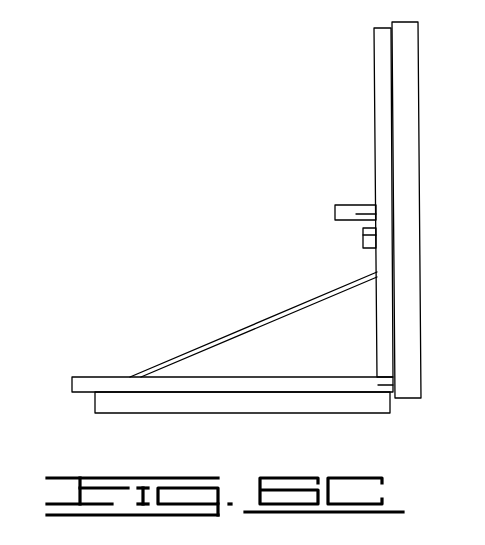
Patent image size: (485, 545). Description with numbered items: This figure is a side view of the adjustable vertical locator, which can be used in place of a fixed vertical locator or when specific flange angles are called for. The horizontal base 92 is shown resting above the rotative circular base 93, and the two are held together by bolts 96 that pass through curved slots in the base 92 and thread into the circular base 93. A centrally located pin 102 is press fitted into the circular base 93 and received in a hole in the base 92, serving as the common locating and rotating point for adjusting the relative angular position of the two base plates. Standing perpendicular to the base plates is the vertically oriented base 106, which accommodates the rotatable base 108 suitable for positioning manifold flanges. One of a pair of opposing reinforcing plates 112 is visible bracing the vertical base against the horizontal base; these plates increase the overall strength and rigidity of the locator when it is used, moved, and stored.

The base 92 is at (383, 117).
The rotative circular base 93 is at (407, 148).
The bolts 96 is at (363, 242).
The pin 102 is at (352, 209).
The vertically oriented base 106 is at (82, 396).
The rotatable base 108 is at (163, 405).
The reinforcing plates 112 is at (297, 350).